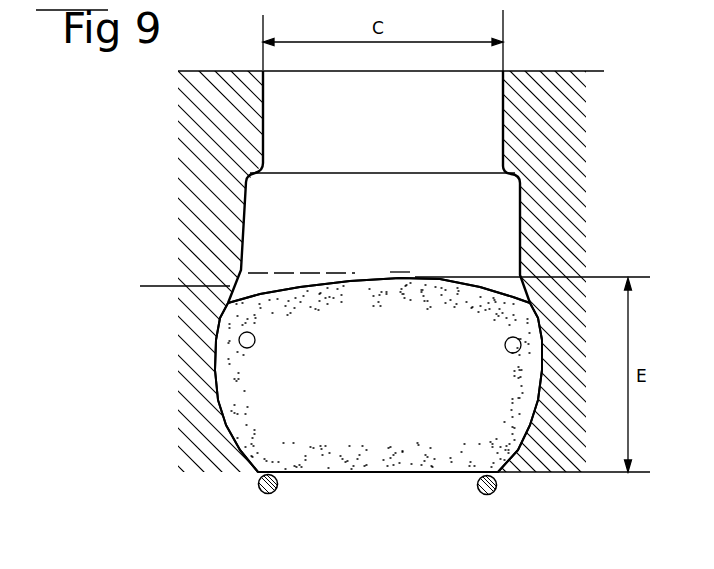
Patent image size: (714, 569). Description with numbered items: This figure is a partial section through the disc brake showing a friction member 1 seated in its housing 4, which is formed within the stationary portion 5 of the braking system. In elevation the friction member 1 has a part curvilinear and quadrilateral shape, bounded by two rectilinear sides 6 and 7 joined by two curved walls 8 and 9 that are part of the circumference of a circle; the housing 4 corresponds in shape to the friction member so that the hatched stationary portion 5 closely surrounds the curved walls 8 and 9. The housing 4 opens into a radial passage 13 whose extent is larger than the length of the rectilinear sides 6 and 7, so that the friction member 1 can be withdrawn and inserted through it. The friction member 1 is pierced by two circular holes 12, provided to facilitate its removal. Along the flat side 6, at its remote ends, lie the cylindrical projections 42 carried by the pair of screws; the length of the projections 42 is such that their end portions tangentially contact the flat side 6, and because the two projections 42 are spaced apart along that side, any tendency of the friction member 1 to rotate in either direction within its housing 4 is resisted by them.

The friction member 1 is at (443, 425).
The housing 4 is at (386, 283).
The stationary portion 5 is at (560, 152).
The rectilinear side 6 is at (340, 481).
The rectilinear side 7 is at (303, 290).
The curved wall 8 is at (215, 377).
The curved wall 9 is at (545, 388).
The holes 12 is at (520, 345).
The radial passage 13 is at (382, 143).
The cylindrical projections 42 is at (493, 495).